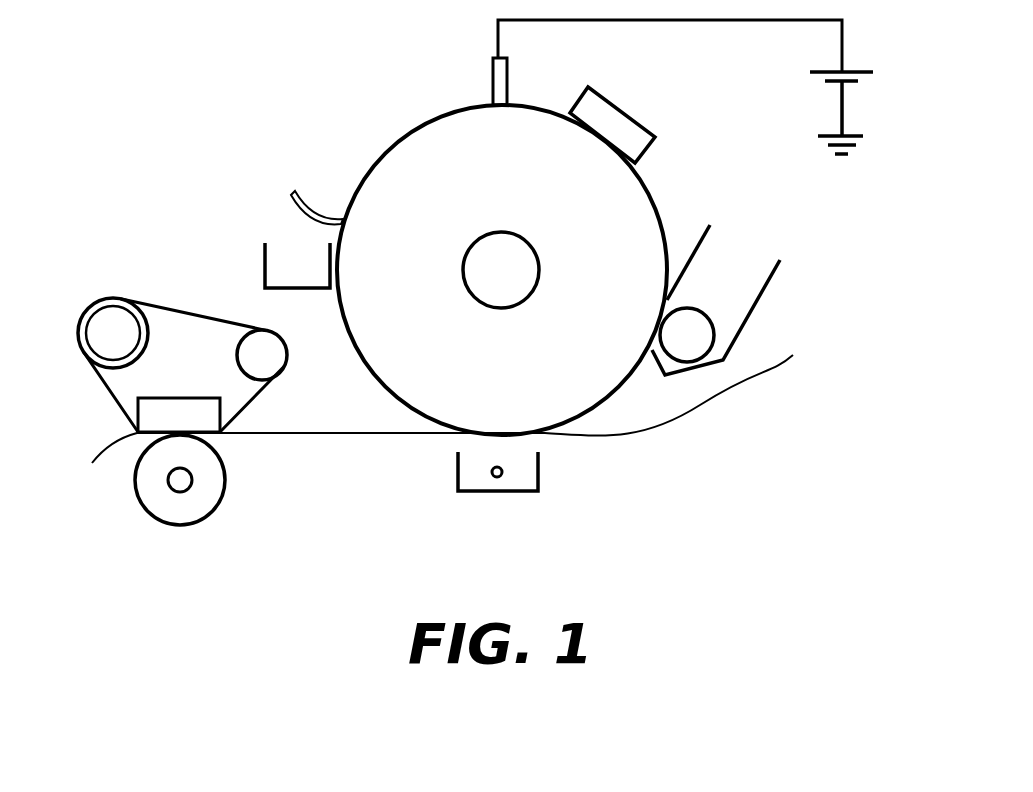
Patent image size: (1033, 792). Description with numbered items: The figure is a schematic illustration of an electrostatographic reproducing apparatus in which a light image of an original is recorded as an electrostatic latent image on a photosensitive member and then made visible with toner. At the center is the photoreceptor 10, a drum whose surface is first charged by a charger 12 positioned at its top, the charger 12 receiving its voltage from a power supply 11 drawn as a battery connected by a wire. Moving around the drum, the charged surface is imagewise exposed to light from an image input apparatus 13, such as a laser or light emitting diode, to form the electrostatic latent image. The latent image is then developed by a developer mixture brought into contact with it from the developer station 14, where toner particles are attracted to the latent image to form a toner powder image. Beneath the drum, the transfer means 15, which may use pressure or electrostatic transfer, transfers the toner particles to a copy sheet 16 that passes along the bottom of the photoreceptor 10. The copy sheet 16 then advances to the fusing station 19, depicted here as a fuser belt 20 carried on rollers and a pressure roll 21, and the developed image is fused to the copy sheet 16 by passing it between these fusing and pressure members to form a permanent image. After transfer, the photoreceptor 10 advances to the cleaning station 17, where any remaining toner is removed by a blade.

The photoreceptor 10 is at (650, 197).
The power supply 11 is at (843, 58).
The charger 12 is at (494, 95).
The image input apparatus 13 is at (627, 113).
The developer station 14 is at (727, 272).
The transfer means 15 is at (538, 466).
The copy sheet 16 is at (740, 398).
The cleaning station 17 is at (276, 212).
The fusing station 19 is at (98, 415).
The fuser belt 20 is at (170, 310).
The pressure roll 21 is at (218, 487).